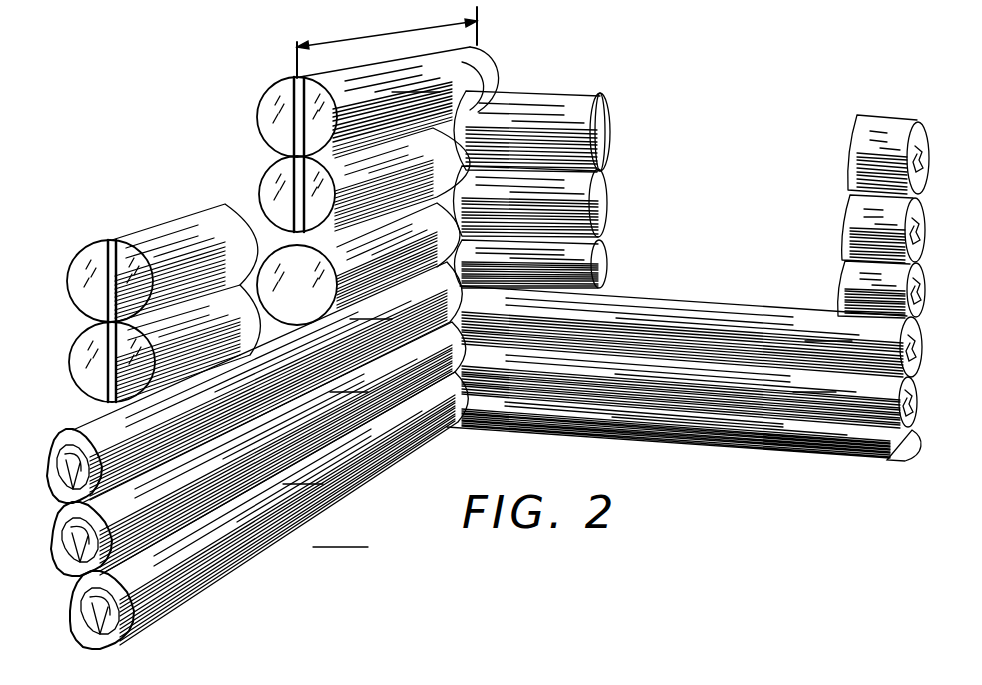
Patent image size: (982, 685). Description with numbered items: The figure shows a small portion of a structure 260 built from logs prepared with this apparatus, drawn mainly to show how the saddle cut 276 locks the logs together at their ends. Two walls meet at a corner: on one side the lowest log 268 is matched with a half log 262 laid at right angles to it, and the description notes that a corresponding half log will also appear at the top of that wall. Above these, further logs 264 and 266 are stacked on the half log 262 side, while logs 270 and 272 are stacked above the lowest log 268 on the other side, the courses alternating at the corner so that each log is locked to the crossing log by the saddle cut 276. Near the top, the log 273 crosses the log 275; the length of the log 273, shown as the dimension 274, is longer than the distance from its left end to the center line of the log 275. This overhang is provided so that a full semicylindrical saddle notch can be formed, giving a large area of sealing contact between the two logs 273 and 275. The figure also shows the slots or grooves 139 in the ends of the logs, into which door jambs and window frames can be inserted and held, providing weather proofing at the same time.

The slots or grooves 139 is at (605, 140).
The log wall corner assembly 260 is at (257, 455).
The half log 262 is at (810, 458).
The log 264 is at (689, 391).
The log 266 is at (691, 331).
The lowest log 268 is at (269, 510).
The log 270 is at (258, 449).
The log 272 is at (254, 382).
The log 273 is at (363, 102).
The dimension 274 is at (373, 35).
The log 275 is at (562, 112).
The saddle cut 276 is at (486, 58).